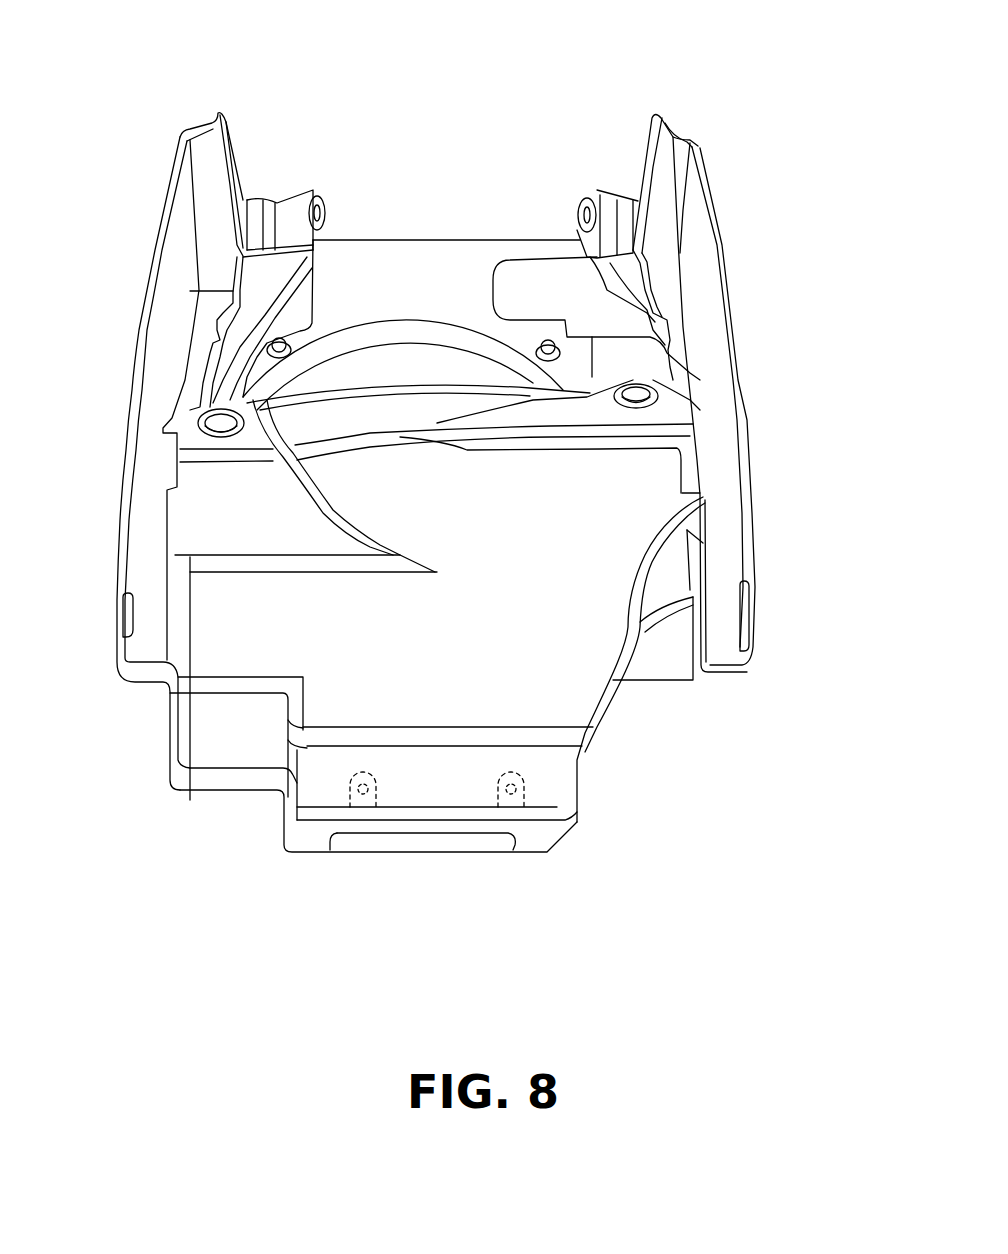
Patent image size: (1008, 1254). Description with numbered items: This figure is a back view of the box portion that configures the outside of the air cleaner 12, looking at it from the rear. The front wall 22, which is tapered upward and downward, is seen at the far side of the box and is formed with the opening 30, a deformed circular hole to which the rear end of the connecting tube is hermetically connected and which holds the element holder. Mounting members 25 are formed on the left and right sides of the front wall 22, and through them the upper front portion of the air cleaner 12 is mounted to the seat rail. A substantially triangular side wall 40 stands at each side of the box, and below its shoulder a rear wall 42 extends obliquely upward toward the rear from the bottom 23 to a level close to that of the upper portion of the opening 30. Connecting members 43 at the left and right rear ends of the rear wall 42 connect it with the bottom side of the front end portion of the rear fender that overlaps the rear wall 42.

The air cleaner 12 is at (268, 157).
The front wall 22 is at (428, 257).
The base bracket 23 is at (530, 842).
The mounting member 25 is at (330, 187).
The opening 30 is at (482, 375).
The side wall 40 is at (165, 252).
The rear wall 42 is at (577, 663).
The connecting member 43 is at (219, 418).